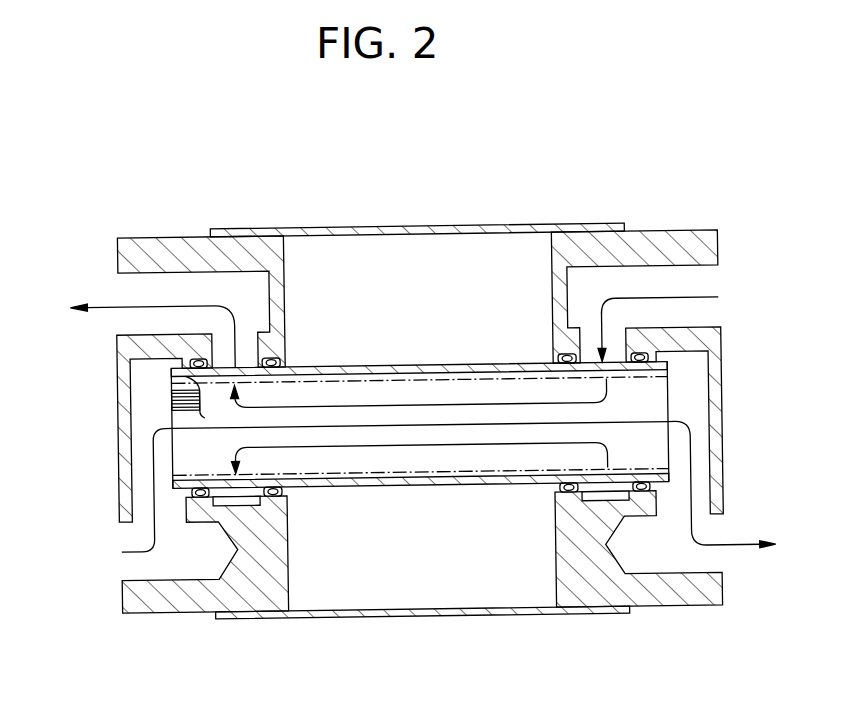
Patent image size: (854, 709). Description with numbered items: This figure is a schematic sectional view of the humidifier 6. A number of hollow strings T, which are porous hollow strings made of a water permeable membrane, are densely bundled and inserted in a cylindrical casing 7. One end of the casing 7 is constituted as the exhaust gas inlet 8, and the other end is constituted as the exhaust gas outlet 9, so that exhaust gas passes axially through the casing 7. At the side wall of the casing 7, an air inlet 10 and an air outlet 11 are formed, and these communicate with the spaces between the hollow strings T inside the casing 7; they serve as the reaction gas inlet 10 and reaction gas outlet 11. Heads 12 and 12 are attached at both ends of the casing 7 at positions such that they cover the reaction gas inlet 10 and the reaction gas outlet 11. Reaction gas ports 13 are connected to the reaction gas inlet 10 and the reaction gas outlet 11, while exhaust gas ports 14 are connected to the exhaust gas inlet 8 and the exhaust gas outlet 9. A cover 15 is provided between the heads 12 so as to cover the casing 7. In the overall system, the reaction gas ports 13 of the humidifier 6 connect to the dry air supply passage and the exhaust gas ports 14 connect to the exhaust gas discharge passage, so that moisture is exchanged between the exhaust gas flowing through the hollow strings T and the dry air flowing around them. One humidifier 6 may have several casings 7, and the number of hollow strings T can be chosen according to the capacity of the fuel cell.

The humidifier 6 is at (472, 171).
The cylindrical casing 7 is at (419, 490).
The exhaust gas inlet 8 is at (172, 457).
The exhaust gas outlet 9 is at (670, 396).
The air inlet 10 is at (595, 362).
The air outlet 11 is at (244, 364).
The head 12 is at (160, 248).
The reaction gas port 13 is at (130, 288).
The exhaust gas port 14 is at (130, 533).
The cover 15 is at (417, 225).
The hollow string T is at (183, 410).